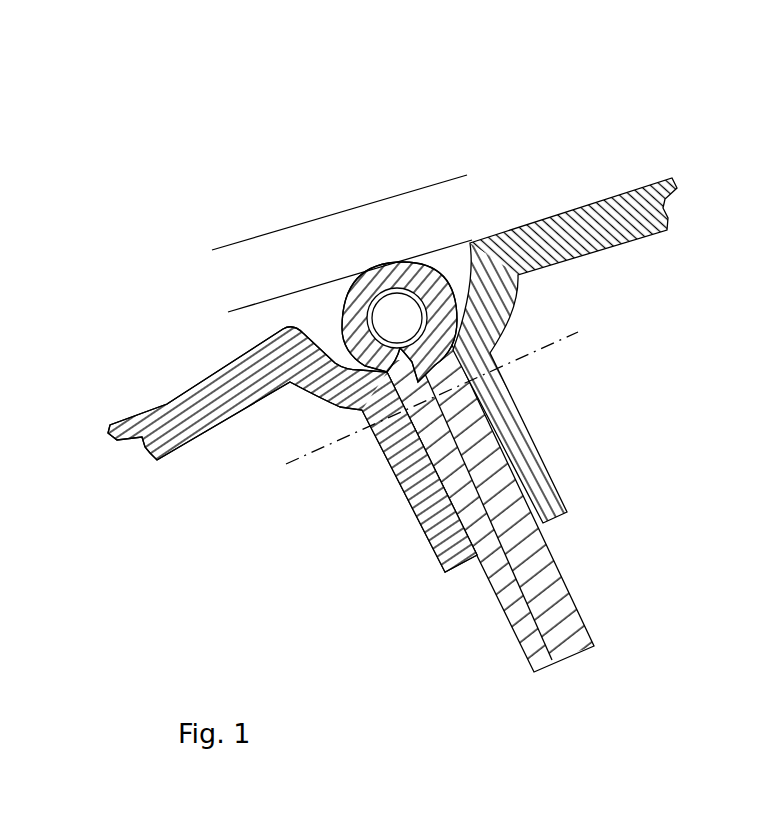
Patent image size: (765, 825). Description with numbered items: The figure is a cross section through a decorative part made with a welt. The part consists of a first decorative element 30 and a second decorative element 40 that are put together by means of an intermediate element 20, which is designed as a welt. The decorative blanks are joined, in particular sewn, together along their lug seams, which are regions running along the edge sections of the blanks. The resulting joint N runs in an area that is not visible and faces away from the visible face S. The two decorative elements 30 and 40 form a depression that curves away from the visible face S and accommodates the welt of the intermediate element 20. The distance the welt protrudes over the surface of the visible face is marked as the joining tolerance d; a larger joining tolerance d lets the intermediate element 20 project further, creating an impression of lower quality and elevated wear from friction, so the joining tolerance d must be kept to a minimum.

The intermediate element 20 is at (543, 570).
The first decorative element 30 is at (167, 403).
The second decorative element 40 is at (557, 214).
The joining tolerance d is at (272, 232).
The joint N is at (538, 348).
The visible face S is at (281, 112).